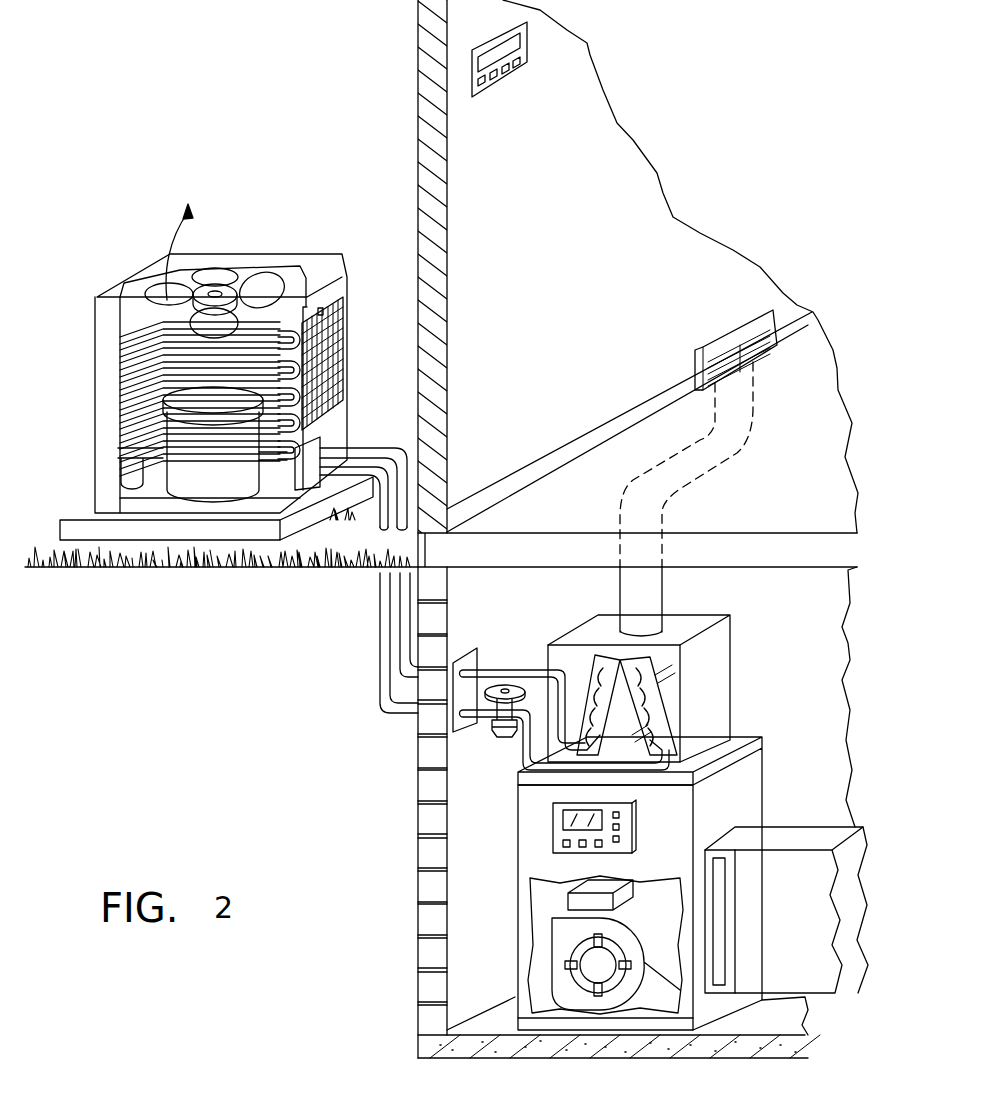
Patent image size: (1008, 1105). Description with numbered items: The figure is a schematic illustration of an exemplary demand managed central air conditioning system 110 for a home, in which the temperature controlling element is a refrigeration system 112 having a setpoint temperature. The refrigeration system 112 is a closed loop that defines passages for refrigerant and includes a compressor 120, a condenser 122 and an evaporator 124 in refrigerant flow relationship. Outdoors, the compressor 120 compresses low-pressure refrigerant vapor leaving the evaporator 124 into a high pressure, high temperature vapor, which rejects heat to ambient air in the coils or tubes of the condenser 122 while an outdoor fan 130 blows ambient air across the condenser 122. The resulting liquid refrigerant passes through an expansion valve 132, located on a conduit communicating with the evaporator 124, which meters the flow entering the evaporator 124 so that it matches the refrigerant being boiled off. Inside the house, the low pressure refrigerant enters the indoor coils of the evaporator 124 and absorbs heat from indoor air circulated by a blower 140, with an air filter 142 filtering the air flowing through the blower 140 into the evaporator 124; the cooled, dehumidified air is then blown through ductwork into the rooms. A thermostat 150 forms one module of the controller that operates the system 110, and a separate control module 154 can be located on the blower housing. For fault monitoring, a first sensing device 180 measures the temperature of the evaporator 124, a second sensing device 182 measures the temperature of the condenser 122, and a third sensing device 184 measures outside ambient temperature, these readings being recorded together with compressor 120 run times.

The central air conditioning system 110 is at (223, 391).
The refrigeration system 112 is at (547, 529).
The compressor 120 is at (225, 444).
The condenser 122 is at (115, 415).
The evaporator 124 is at (664, 688).
The outdoor fan 130 is at (268, 285).
The expansion valve 132 is at (500, 741).
The blower 140 is at (555, 958).
The air filter 142 is at (725, 928).
The thermostat 150 is at (500, 88).
The control module 154 is at (637, 848).
The first sensing device 180 is at (648, 672).
The second sensing device 182 is at (282, 400).
The third sensing device 184 is at (344, 357).